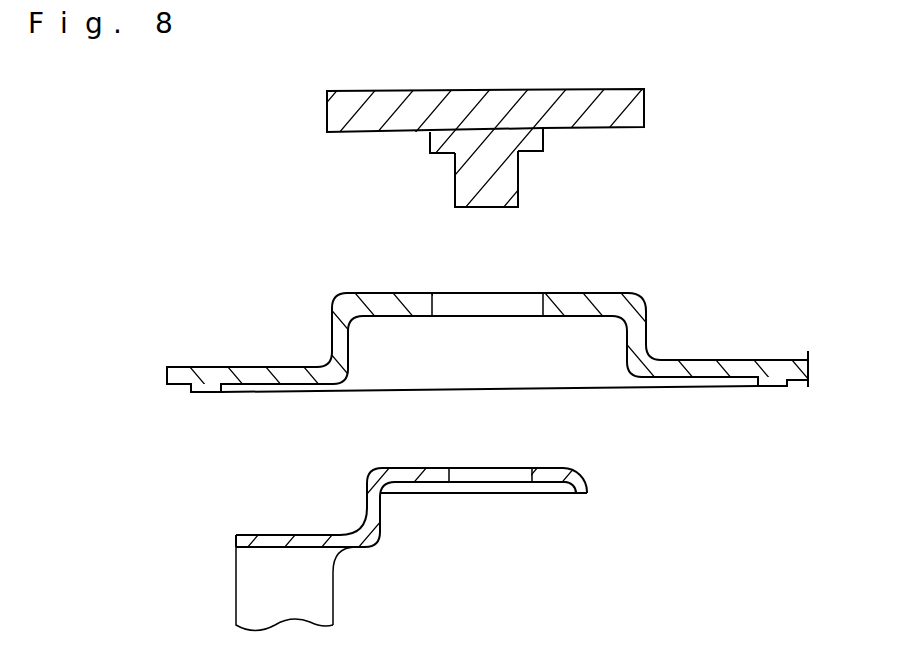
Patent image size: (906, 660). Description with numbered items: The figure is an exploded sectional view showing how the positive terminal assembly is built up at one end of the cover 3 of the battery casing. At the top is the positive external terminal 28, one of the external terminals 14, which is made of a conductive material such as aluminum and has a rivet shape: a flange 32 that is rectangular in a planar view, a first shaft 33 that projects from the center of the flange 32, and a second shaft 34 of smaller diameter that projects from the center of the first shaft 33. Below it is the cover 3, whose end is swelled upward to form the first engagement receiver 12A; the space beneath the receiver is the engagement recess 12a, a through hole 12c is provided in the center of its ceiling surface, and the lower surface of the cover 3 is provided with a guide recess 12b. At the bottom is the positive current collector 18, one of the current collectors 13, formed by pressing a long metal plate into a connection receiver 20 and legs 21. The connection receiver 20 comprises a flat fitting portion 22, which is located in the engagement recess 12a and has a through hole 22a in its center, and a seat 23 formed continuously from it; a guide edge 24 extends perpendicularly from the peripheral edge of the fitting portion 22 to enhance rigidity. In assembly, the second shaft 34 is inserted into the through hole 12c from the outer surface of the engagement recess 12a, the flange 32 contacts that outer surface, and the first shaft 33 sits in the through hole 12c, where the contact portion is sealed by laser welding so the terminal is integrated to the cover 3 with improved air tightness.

The positive external terminal 28 is at (222, 110).
The external terminal 14 is at (430, 147).
The flange 32 is at (342, 114).
The first shaft 33 is at (430, 145).
The second shaft 34 is at (455, 189).
The cover 3 is at (225, 367).
The first engagement receiver 12A is at (645, 298).
The through hole 12c is at (445, 302).
The engagement recess 12a is at (630, 347).
The guide recess 12b is at (700, 383).
The connection receiver 20 is at (300, 444).
The fitting portion 22 is at (373, 480).
The through hole 22a is at (528, 474).
The seat 23 is at (267, 535).
The guide edge 24 is at (588, 490).
The leg 21 is at (257, 602).
The positive current collector 18 is at (320, 602).
The current collector 13 is at (405, 586).